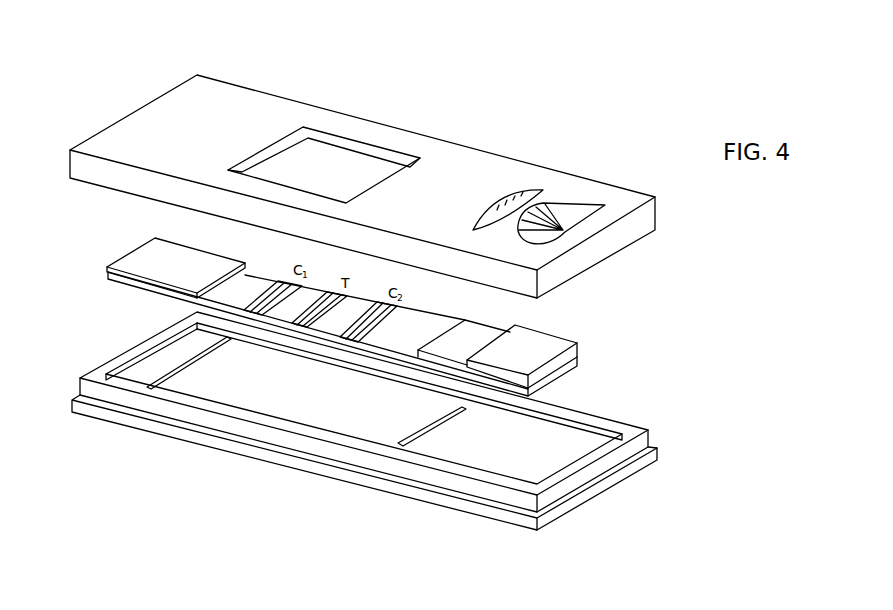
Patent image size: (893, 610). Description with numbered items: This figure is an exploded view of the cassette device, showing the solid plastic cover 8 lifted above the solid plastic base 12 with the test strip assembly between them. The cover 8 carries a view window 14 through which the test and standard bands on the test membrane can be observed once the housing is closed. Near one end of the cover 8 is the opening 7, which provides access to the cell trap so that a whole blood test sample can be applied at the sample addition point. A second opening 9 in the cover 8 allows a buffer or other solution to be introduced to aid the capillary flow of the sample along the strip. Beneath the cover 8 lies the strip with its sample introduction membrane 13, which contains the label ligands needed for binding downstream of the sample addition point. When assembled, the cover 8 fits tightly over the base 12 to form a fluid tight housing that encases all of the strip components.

The view window 14 is at (306, 136).
The cover 8 is at (453, 157).
The opening 7 is at (520, 197).
The opening 9 is at (580, 210).
The sample introduction membrane 13 is at (573, 350).
The base 12 is at (607, 423).